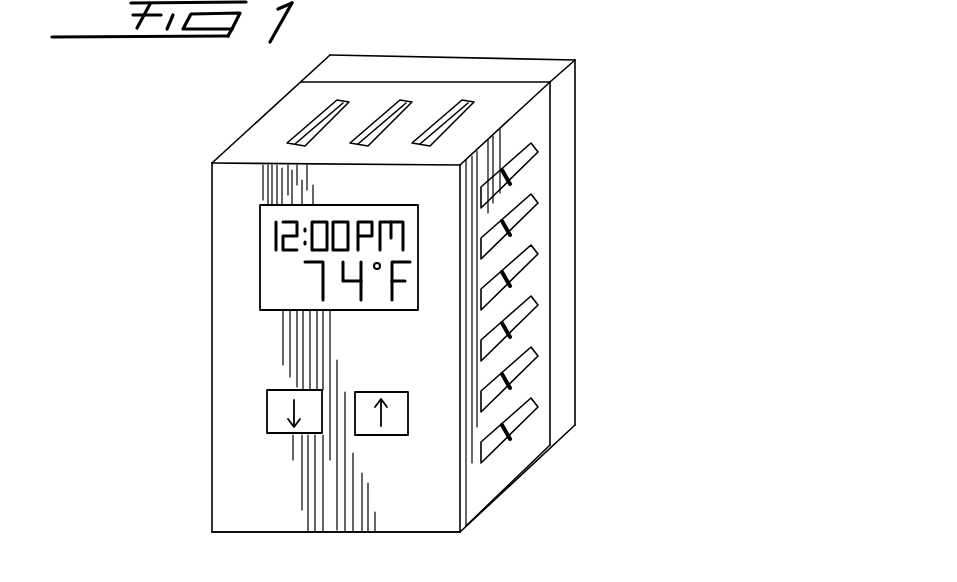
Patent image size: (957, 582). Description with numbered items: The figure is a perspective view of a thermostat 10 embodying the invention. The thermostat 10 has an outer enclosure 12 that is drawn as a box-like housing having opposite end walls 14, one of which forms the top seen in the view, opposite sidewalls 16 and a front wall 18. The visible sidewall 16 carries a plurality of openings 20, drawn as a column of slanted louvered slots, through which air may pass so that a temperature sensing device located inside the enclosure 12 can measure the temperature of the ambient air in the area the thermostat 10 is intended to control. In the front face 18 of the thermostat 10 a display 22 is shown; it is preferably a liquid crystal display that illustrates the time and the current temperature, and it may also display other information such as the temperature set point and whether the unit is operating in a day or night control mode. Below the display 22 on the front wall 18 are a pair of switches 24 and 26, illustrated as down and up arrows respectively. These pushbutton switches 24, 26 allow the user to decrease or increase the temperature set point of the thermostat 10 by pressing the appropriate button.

The thermostat 10 is at (618, 118).
The outer enclosure 12 is at (545, 54).
The end walls 14 is at (415, 72).
The sidewalls 16 is at (540, 288).
The front wall 18 is at (227, 517).
The openings 20 is at (522, 213).
The display 22 is at (273, 289).
The switch 24 is at (273, 422).
The switch 26 is at (395, 435).